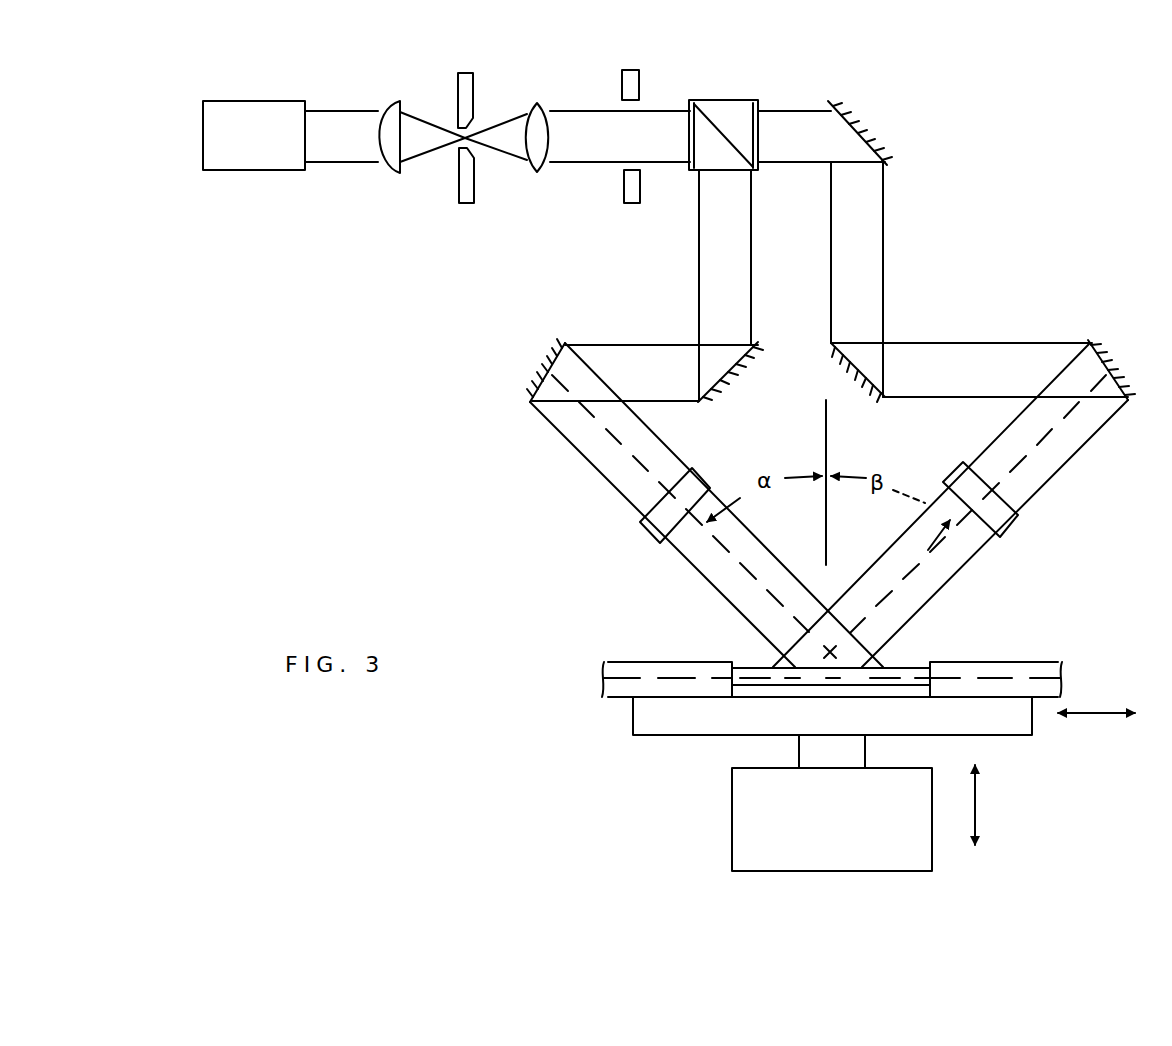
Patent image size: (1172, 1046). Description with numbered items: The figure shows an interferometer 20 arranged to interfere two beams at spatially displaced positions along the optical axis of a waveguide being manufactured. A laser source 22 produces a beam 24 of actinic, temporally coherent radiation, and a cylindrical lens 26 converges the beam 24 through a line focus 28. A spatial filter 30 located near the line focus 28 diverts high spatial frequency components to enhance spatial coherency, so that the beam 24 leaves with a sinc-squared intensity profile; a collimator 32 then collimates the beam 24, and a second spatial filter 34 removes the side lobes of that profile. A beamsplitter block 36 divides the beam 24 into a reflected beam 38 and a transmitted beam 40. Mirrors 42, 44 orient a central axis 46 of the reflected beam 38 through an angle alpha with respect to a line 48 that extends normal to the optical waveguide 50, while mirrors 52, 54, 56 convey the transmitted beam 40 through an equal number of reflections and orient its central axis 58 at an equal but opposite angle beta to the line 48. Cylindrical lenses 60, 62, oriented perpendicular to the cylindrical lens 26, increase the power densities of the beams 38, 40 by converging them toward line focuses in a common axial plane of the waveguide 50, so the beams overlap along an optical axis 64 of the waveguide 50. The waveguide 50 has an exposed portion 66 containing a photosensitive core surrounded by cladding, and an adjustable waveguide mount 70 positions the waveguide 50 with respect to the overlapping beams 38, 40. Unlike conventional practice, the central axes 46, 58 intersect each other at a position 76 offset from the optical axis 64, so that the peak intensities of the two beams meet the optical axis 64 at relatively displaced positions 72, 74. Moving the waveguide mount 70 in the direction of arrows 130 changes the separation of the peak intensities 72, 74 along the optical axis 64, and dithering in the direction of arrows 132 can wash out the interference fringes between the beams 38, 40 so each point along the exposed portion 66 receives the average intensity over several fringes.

The interferometer 20 is at (1003, 135).
The laser source 22 is at (268, 151).
The beam 24 is at (334, 166).
The cylindrical lens 26 is at (396, 100).
The line focus 28 is at (470, 141).
The spatial filter 30 is at (470, 99).
The collimator 32 is at (541, 175).
The second spatial filter 34 is at (620, 78).
The beamsplitter block 36 is at (745, 100).
The reflected beam 38 is at (699, 256).
The transmitted beam 40 is at (831, 265).
The mirror 42 is at (748, 344).
The mirror 44 is at (534, 414).
The central axis 46 is at (730, 556).
The line 48 is at (826, 436).
The optical waveguide 50 is at (945, 650).
The mirror 52 is at (862, 160).
The mirror 54 is at (868, 378).
The mirror 56 is at (1098, 357).
The central axis 58 is at (912, 568).
The cylindrical lens 60 is at (645, 528).
The cylindrical lens 62 is at (1010, 530).
The optical axis 64 is at (1035, 662).
The exposed portion 66 is at (750, 662).
The adjustable waveguide mount 70 is at (692, 738).
The displaced position 72 is at (820, 670).
The displaced position 74 is at (858, 676).
The position 76 is at (836, 652).
The arrows 130 is at (983, 800).
The arrows 132 is at (1097, 718).